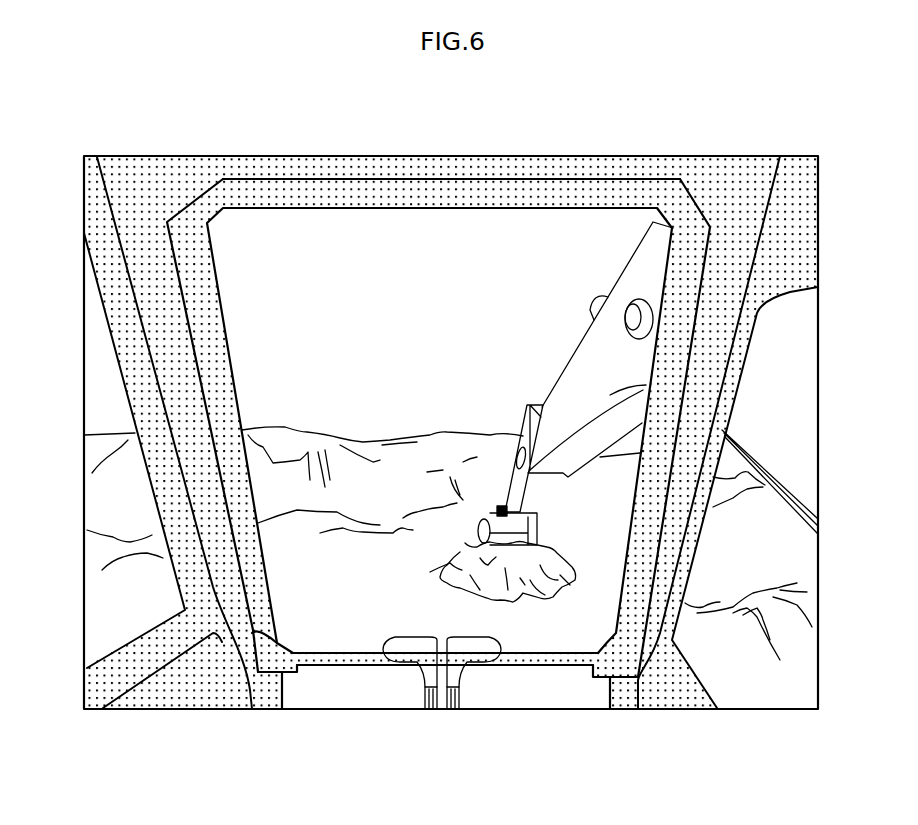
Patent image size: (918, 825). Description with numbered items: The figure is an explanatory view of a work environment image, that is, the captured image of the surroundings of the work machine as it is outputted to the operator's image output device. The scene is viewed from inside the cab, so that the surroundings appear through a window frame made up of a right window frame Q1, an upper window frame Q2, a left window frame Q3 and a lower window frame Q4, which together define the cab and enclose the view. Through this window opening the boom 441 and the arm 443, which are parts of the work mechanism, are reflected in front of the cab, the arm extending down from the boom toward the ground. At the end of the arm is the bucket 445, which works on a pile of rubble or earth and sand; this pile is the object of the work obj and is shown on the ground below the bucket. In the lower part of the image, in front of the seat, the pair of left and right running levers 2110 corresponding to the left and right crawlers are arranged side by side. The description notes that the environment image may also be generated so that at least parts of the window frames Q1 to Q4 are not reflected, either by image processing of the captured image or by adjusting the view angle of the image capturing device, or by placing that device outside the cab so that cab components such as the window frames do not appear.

The right window frame Q1 is at (742, 411).
The upper window frame Q2 is at (462, 182).
The left window frame Q3 is at (138, 480).
The lower window frame Q4 is at (538, 677).
The boom 441 is at (603, 466).
The arm 443 is at (500, 448).
The bucket 445 is at (478, 500).
The object of a work obj is at (467, 541).
The running levers 2110 is at (404, 626).